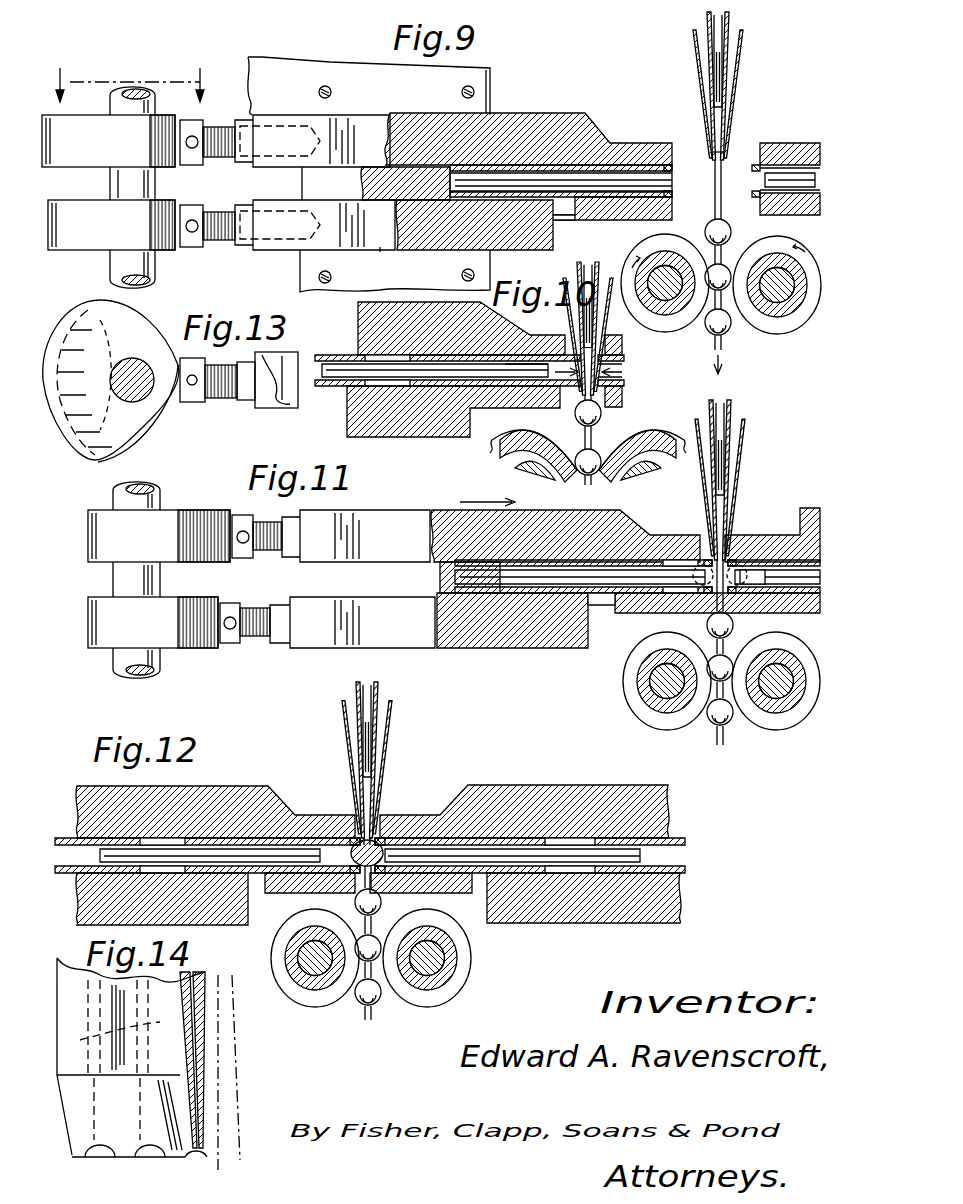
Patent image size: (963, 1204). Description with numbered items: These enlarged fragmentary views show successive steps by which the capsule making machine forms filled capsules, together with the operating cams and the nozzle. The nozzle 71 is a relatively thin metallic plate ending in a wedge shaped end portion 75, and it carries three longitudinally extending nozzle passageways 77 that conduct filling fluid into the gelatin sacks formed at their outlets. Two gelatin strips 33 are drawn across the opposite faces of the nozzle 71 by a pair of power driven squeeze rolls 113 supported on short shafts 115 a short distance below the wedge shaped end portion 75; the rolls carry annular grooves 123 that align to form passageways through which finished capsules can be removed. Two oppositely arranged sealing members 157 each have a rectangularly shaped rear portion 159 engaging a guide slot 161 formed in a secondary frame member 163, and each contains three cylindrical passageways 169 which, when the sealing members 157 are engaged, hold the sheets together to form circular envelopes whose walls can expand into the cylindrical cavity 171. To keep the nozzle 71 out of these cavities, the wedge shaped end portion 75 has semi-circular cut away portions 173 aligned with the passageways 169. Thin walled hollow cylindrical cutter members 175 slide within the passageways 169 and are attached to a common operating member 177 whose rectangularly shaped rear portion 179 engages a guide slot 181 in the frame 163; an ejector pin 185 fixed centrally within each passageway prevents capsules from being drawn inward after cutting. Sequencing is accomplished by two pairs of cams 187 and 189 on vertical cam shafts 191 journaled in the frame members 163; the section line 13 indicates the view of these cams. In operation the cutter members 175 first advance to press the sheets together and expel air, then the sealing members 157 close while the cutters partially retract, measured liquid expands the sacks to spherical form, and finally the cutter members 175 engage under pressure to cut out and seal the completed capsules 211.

In FIG. 9, the section line 13- 13 is at (126, 85).
In FIG. 9, the gelatin strips 33 is at (696, 58).
In FIG. 10, the gelatin strips 33 is at (598, 268).
In FIG. 11, the gelatin strips 33 is at (700, 448).
In FIG. 12, the gelatin strips 33 is at (342, 704).
In FIG. 9, the nozzle 71 is at (728, 28).
In FIG. 10, the nozzle 71 is at (588, 328).
In FIG. 11, the nozzle 71 is at (736, 404).
In FIG. 12, the nozzle 71 is at (380, 686).
In FIG. 14, the nozzle 71 is at (57, 994).
In FIG. 9, the wedge shaped end portion 75 is at (726, 120).
In FIG. 10, the wedge shaped end portion 75 is at (578, 312).
In FIG. 11, the wedge shaped end portion 75 is at (728, 502).
In FIG. 12, the wedge shaped end portion 75 is at (380, 778).
In FIG. 14, the wedge shaped end portion 75 is at (62, 1112).
In FIG. 9, the nozzle passageways 77 is at (728, 82).
In FIG. 10, the nozzle passageways 77 is at (592, 318).
In FIG. 11, the nozzle passageways 77 is at (732, 462).
In FIG. 12, the nozzle passageways 77 is at (378, 748).
In FIG. 14, the nozzle passageways 77 is at (180, 1005).
In FIG. 9, the squeeze rolls 113 is at (656, 336).
In FIG. 10, the squeeze rolls 113 is at (495, 440).
In FIG. 11, the squeeze rolls 113 is at (626, 686).
In FIG. 12, the squeeze rolls 113 is at (472, 964).
In FIG. 9, the short shafts 115 is at (656, 258).
In FIG. 10, the short shafts 115 is at (532, 468).
In FIG. 11, the short shafts 115 is at (650, 700).
In FIG. 12, the short shafts 115 is at (300, 950).
In FIG. 9, the annular grooves 123 is at (690, 232).
In FIG. 10, the annular grooves 123 is at (520, 432).
In FIG. 11, the annular grooves 123 is at (654, 714).
In FIG. 12, the annular grooves 123 is at (452, 994).
In FIG. 9, the sealing members 157 is at (552, 122).
In FIG. 10, the sealing members 157 is at (358, 326).
In FIG. 11, the sealing members 157 is at (598, 520).
In FIG. 12, the sealing members 157 is at (208, 790).
In FIG. 9, the rectangularly shaped rear portion 159 is at (364, 130).
In FIG. 13, the rectangularly shaped rear portion 159 is at (262, 404).
In FIG. 11, the rectangularly shaped rear portion 159 is at (380, 528).
In FIG. 9, the guide slot 161 is at (489, 100).
In FIG. 9, the secondary frame member 163 is at (322, 68).
In FIG. 10, the secondary frame member 163 is at (338, 386).
In FIG. 11, the secondary frame member 163 is at (312, 577).
In FIG. 12, the secondary frame member 163 is at (56, 838).
In FIG. 9, the cylindrical passageways 169 is at (670, 180).
In FIG. 11, the cylindrical passageways 169 is at (708, 556).
In FIG. 12, the cylindrical passageways 169 is at (350, 838).
In FIG. 11, the cylindrical cavity 171 is at (742, 534).
In FIG. 9, the semi-circular cut away portions 173 is at (735, 150).
In FIG. 14, the semi-circular cut away portions 173 is at (195, 1162).
In FIG. 9, the cutter members 175 is at (628, 164).
In FIG. 10, the cutter members 175 is at (570, 348).
In FIG. 11, the cutter members 175 is at (748, 608).
In FIG. 12, the cutter members 175 is at (248, 840).
In FIG. 9, the operating member 177 is at (546, 240).
In FIG. 13, the operating member 177 is at (280, 356).
In FIG. 10, the operating member 177 is at (402, 428).
In FIG. 11, the operating member 177 is at (560, 648).
In FIG. 12, the operating member 177 is at (218, 922).
In FIG. 9, the rectangularly shaped rear portion 179 is at (272, 251).
In FIG. 11, the rectangularly shaped rear portion 179 is at (318, 652).
In FIG. 9, the guide slot 181 is at (384, 248).
In FIG. 9, the ejector pin 185 is at (592, 212).
In FIG. 10, the ejector pin 185 is at (507, 364).
In FIG. 11, the ejector pin 185 is at (600, 604).
In FIG. 12, the ejector pin 185 is at (154, 866).
In FIG. 9, the cams 187 is at (60, 170).
In FIG. 13, the cams 187 is at (70, 436).
In FIG. 11, the cams 187 is at (188, 566).
In FIG. 9, the cams 189 is at (66, 252).
In FIG. 13, the cams 189 is at (148, 436).
In FIG. 11, the cams 189 is at (180, 652).
In FIG. 9, the vertical cam shafts 191 is at (112, 98).
In FIG. 13, the vertical cam shafts 191 is at (128, 360).
In FIG. 11, the vertical cam shafts 191 is at (113, 577).
In FIG. 9, the capsules 211 is at (730, 228).
In FIG. 10, the capsules 211 is at (602, 416).
In FIG. 11, the capsules 211 is at (732, 664).
In FIG. 12, the capsules 211 is at (382, 896).